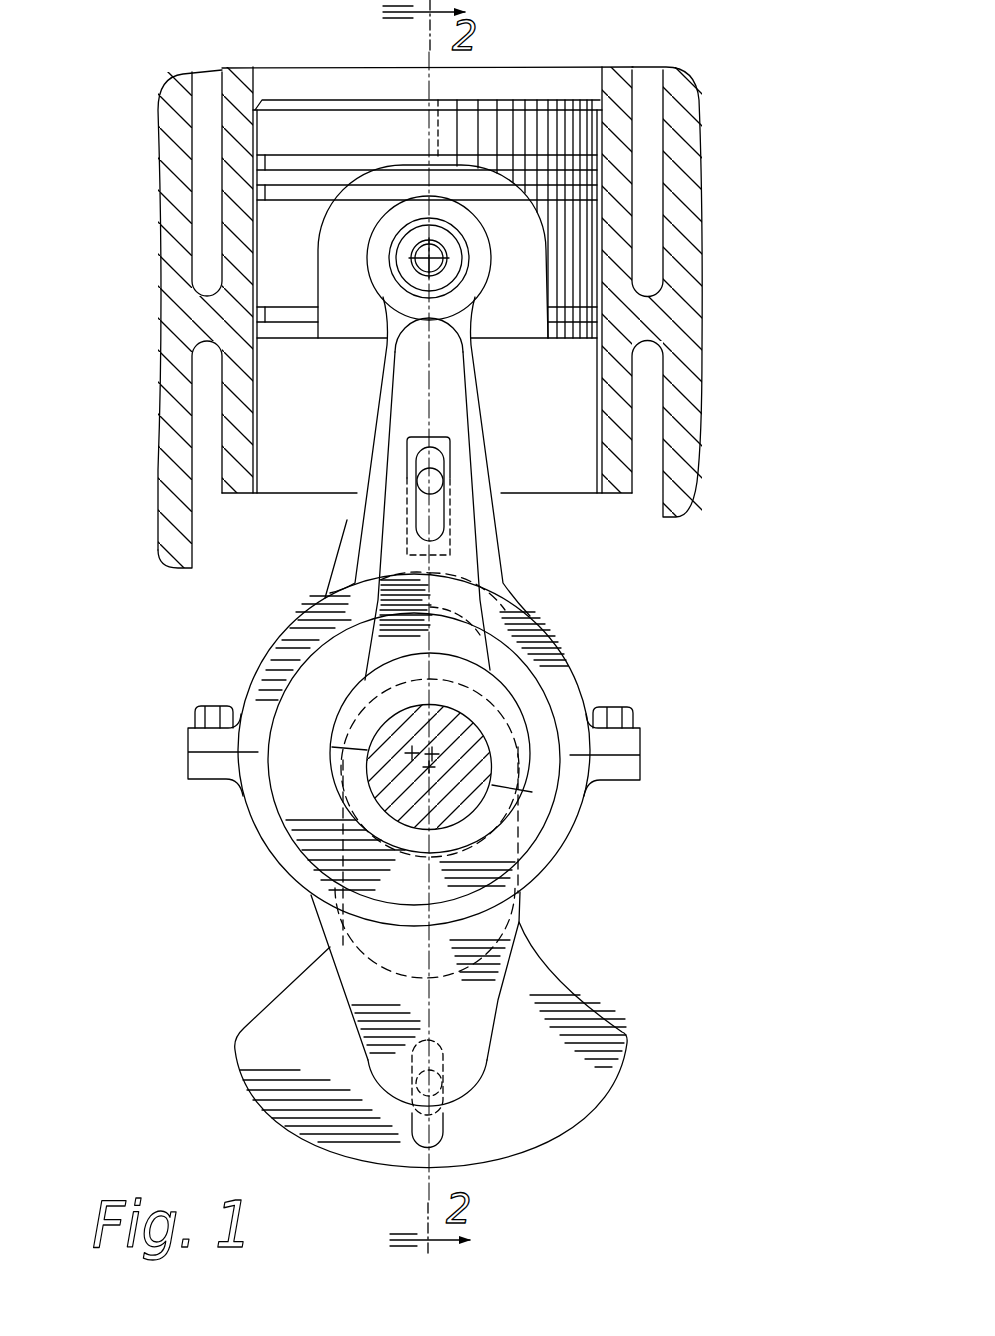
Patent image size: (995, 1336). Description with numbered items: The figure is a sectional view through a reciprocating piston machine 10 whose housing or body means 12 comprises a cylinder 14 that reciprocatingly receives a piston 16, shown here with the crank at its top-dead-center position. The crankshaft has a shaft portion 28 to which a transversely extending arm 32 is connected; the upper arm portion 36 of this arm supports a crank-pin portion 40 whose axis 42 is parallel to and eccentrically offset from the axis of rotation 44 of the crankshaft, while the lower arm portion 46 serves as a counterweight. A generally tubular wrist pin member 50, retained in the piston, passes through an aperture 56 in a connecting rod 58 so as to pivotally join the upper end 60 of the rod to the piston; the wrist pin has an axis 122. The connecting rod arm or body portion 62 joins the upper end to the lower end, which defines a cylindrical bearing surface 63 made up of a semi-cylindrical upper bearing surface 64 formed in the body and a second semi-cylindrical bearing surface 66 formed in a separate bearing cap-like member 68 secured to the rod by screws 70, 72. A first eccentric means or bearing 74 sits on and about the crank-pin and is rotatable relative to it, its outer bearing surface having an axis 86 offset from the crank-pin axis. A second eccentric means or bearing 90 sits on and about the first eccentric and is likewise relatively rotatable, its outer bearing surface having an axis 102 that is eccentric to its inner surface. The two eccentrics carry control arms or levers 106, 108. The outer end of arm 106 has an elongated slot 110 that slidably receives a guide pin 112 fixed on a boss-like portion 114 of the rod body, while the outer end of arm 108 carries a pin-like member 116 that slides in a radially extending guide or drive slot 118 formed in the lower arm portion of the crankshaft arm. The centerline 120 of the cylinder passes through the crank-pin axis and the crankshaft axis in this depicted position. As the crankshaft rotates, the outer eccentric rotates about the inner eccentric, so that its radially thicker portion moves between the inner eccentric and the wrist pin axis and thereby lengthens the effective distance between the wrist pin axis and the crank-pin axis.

The reciprocating piston machine 10 is at (128, 462).
The machine housing or body means 12 is at (155, 542).
The cylinder 14 is at (257, 478).
The piston 16 is at (302, 100).
The shaft portion 28 is at (415, 976).
The transversely extending arm 32 is at (533, 950).
The upper arm portion 36 is at (505, 640).
The crank-pin portion 40 is at (470, 722).
The axis of crank-pin 42 is at (407, 807).
The axis of rotation of crankshaft means 44 is at (427, 912).
The lower arm portion 46 is at (590, 1033).
The wrist pin member 50 is at (392, 268).
The aperture 56 is at (400, 233).
The connecting rod 58 is at (490, 425).
The upper end of connecting rod 60 is at (445, 197).
The connecting rod arm or body portion 62 is at (347, 570).
The cylindrical bearing surface 63 is at (272, 774).
The semi-cylindrical upper bearing surface 64 is at (330, 635).
The second semi-cylindrical bearing surface 66 is at (280, 798).
The bearing cap-like member 68 is at (265, 848).
The screw 70 is at (200, 706).
The screw 72 is at (633, 712).
The first eccentric means or bearing 74 is at (532, 778).
The axis of outer cylindrical bearing surface of first eccentric 86 is at (432, 750).
The second eccentric means or bearing 90 is at (547, 833).
The axis of outer cylindrical bearing surface of second eccentric 102 is at (410, 752).
The control arm or lever 106 is at (478, 608).
The control arm or lever 108 is at (478, 1072).
The elongated slot 110 is at (420, 520).
The guide pin 112 is at (418, 474).
The boss-like portion 114 is at (438, 433).
The pin-like member 116 is at (440, 1093).
The guide or drive slot 118 is at (412, 1130).
The centerline of cylinder 120 is at (465, 563).
The axis of wrist pin 122 is at (437, 266).